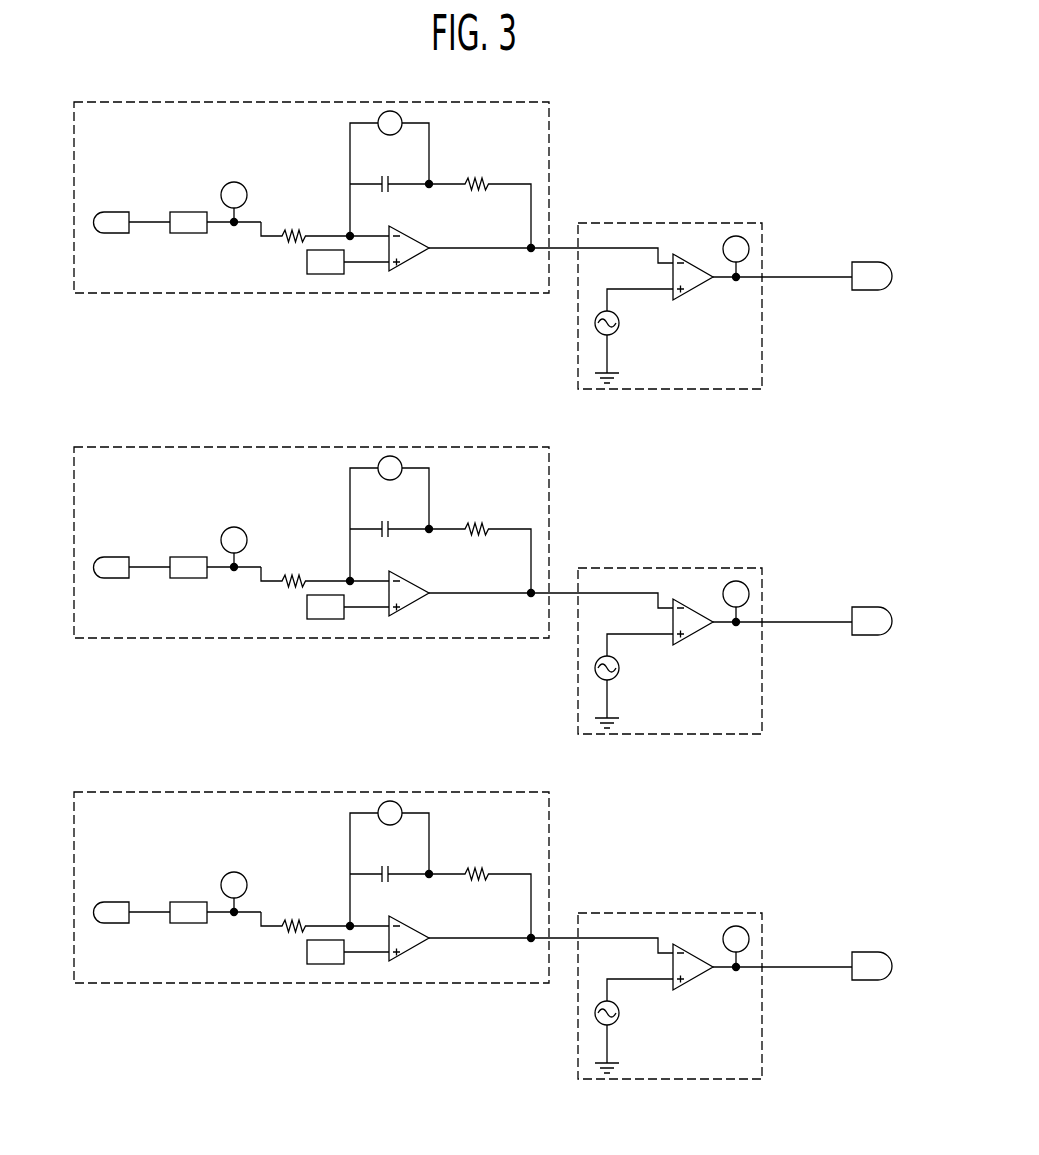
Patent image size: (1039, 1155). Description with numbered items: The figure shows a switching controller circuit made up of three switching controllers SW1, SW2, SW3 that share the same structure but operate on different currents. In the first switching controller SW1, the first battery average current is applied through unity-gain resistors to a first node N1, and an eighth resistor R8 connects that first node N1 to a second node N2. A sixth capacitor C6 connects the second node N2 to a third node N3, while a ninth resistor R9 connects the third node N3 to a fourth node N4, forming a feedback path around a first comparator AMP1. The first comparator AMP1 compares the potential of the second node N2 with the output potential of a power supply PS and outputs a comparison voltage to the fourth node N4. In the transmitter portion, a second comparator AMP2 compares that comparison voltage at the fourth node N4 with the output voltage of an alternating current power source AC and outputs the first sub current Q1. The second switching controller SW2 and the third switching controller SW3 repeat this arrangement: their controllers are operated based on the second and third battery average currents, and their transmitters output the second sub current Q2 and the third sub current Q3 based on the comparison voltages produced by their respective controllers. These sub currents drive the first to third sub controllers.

The first switching controller SW1 is at (856, 120).
The second switching controller SW2 is at (483, 587).
The third switching controller SW3 is at (483, 932).
The first node N1 is at (234, 217).
The second node N2 is at (388, 175).
The third node N3 is at (429, 197).
The fourth node N4 is at (503, 261).
The eighth resistor R8 is at (305, 224).
The ninth resistor R9 is at (480, 201).
The sixth capacitor C6 is at (389, 173).
The first comparator AMP1 is at (418, 243).
The second comparator AMP2 is at (670, 276).
The power supply PS is at (348, 263).
The Alternating Current power AC is at (634, 336).
The first sub current Q1 is at (827, 276).
The second sub current Q2 is at (827, 621).
The third sub current Q3 is at (827, 966).